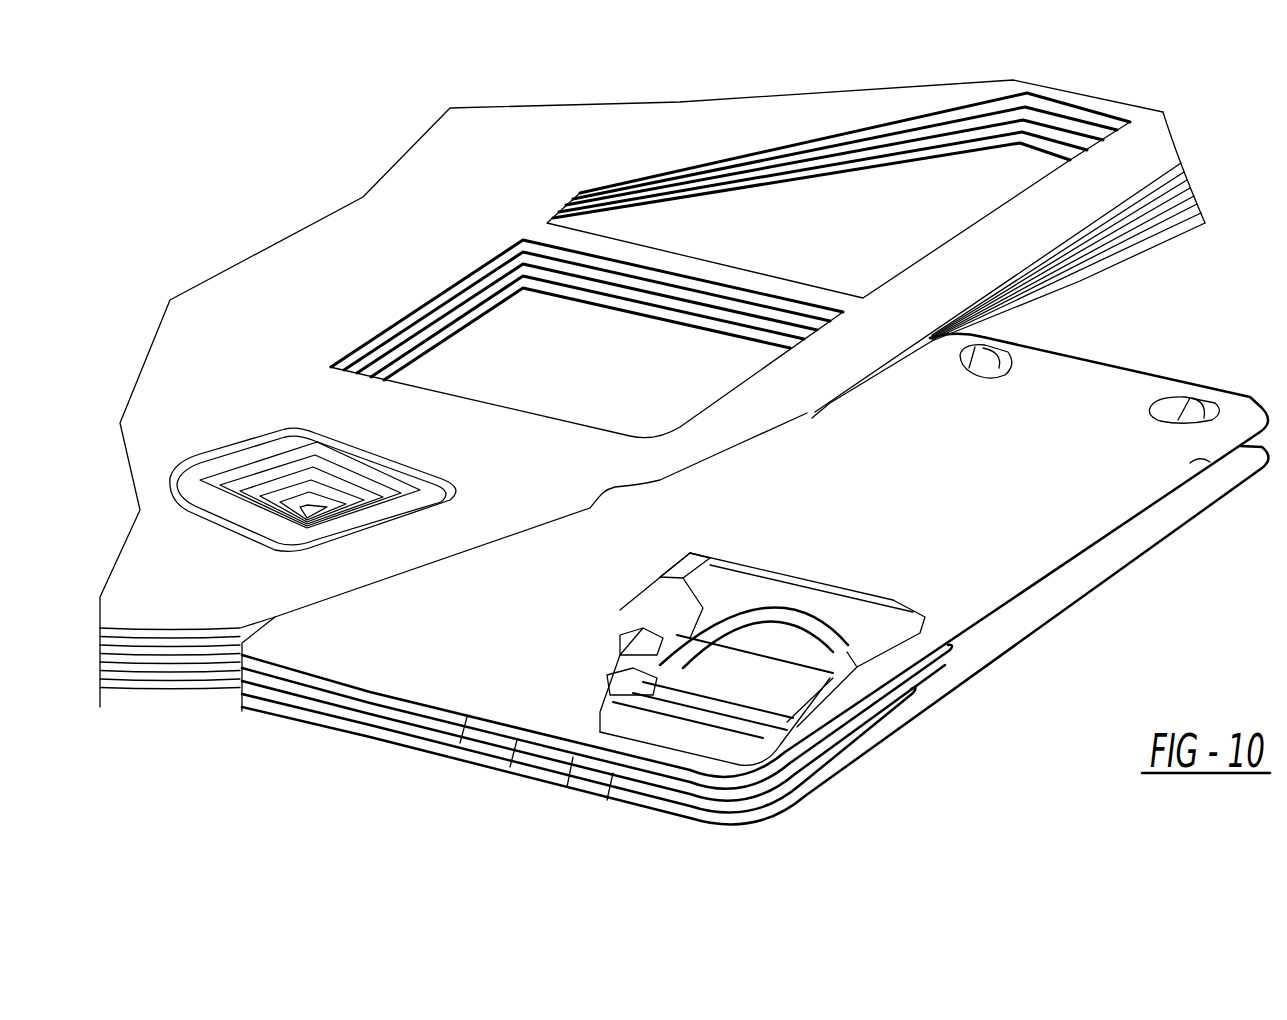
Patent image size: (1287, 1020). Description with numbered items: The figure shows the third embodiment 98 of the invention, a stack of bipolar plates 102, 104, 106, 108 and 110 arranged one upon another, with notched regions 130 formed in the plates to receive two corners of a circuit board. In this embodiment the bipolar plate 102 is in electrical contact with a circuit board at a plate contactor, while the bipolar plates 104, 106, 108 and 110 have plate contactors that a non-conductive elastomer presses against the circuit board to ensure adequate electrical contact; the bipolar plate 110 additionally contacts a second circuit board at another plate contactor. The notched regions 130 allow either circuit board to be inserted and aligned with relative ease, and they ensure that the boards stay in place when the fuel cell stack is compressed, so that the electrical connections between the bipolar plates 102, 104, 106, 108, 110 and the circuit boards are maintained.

The third embodiment 98 is at (688, 56).
The bipolar plate 102 is at (653, 813).
The bipolar plate 104 is at (610, 790).
The bipolar plate 106 is at (547, 787).
The bipolar plate 108 is at (470, 770).
The bipolar plate 110 is at (402, 746).
The notched regions 130 is at (1000, 358).